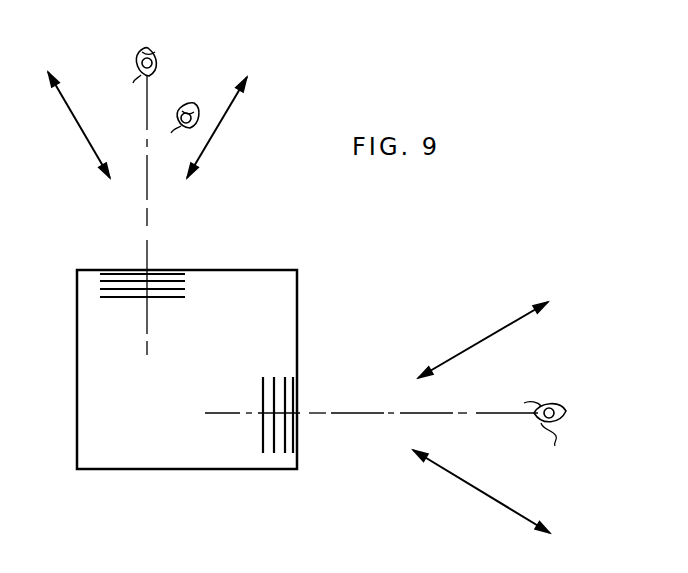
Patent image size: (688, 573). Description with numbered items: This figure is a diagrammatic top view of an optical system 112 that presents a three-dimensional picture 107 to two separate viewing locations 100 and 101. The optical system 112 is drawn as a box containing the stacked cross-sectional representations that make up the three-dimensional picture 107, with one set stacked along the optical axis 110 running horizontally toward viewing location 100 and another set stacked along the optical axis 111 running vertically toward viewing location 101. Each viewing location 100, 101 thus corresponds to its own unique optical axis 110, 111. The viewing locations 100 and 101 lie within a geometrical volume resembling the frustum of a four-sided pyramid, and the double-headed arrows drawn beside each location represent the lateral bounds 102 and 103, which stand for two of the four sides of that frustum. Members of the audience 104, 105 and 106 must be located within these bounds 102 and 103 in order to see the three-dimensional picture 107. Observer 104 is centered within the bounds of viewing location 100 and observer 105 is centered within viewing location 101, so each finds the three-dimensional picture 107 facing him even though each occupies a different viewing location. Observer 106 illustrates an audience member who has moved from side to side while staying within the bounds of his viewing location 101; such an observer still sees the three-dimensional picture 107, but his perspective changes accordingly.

The viewing location 100 is at (622, 425).
The viewing location 101 is at (162, 29).
The lateral bound 102 is at (497, 332).
The lateral bound 103 is at (76, 120).
The observer 104 is at (547, 437).
The observer 105 is at (158, 60).
The observer 106 is at (201, 110).
The three-dimensional picture 107 is at (290, 342).
The optical axis 110 is at (445, 413).
The optical axis 111 is at (147, 200).
The optical system 112 is at (138, 444).